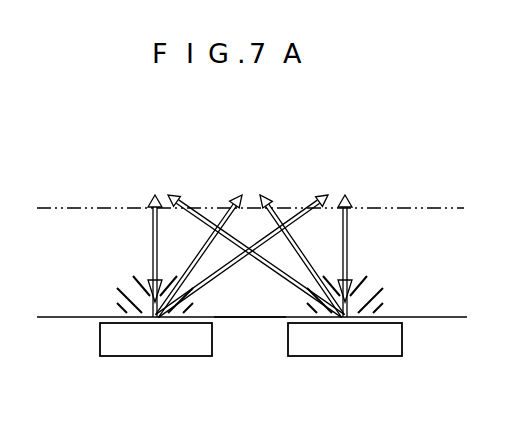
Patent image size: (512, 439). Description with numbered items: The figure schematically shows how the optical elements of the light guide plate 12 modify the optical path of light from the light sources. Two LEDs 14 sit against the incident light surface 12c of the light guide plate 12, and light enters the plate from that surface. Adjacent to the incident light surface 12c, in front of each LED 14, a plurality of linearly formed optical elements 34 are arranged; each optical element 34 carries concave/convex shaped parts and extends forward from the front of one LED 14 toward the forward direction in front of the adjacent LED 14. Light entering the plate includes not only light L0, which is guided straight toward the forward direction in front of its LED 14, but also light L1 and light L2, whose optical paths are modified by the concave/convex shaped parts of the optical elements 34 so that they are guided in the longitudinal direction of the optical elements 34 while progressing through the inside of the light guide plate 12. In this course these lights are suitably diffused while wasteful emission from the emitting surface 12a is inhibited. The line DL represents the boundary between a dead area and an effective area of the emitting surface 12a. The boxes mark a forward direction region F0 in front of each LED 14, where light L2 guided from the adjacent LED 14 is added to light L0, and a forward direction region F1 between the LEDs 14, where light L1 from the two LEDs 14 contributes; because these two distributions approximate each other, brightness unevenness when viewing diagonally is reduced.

The light guide plate 12 is at (58, 352).
The emitting surface 12a is at (65, 275).
The incident light surface 12c is at (255, 318).
The LED 14 is at (172, 358).
The optical element 34 is at (125, 280).
The light guided toward the forward direction L0 is at (382, 230).
The light whose optical path is modified L1 is at (274, 200).
The light whose optical path is modified L2 is at (326, 168).
The boundary line DL is at (65, 207).
The forward direction region in front of the LEDs F0 is at (250, 111).
The forward direction region between the LEDs F1 is at (248, 111).